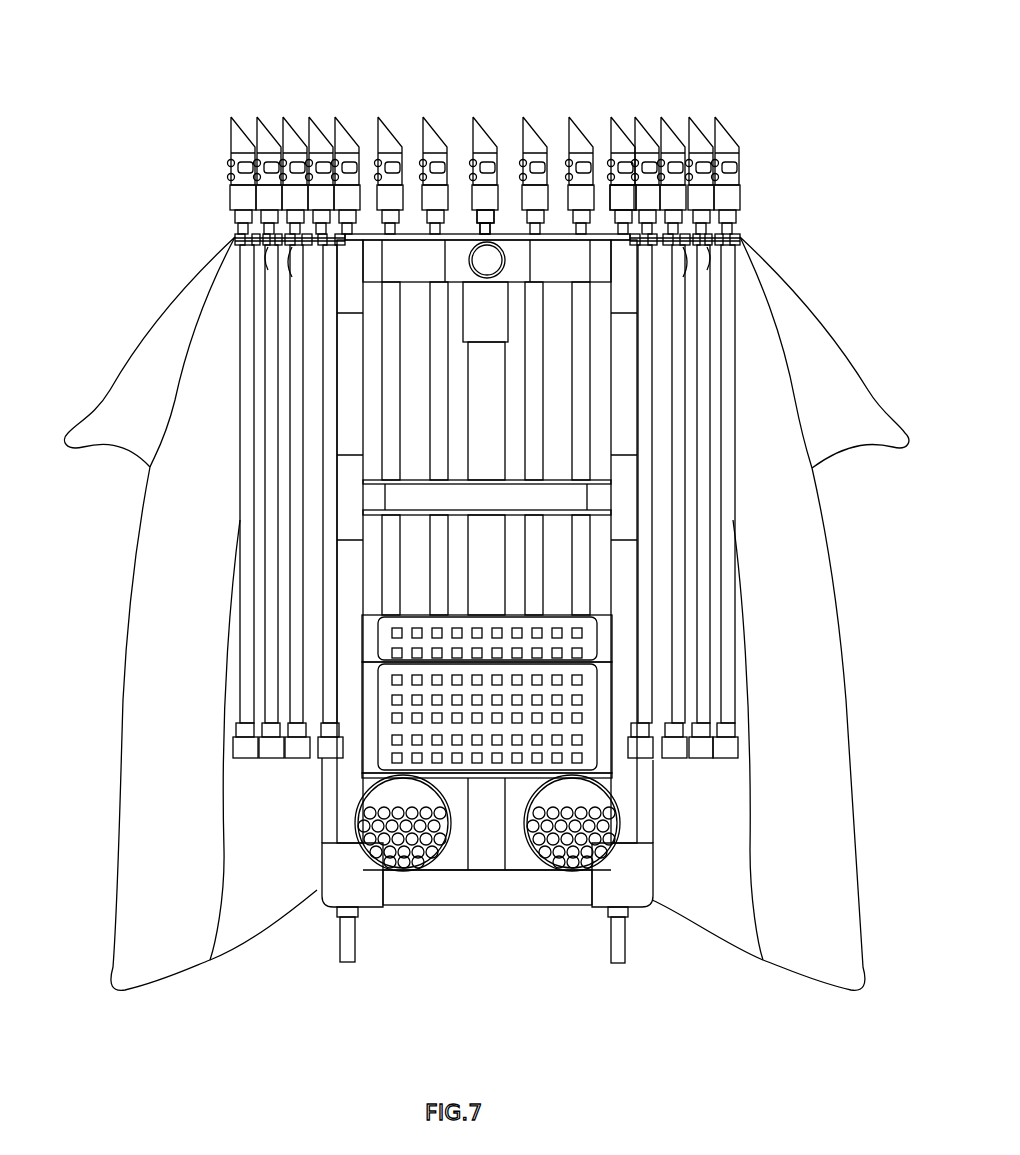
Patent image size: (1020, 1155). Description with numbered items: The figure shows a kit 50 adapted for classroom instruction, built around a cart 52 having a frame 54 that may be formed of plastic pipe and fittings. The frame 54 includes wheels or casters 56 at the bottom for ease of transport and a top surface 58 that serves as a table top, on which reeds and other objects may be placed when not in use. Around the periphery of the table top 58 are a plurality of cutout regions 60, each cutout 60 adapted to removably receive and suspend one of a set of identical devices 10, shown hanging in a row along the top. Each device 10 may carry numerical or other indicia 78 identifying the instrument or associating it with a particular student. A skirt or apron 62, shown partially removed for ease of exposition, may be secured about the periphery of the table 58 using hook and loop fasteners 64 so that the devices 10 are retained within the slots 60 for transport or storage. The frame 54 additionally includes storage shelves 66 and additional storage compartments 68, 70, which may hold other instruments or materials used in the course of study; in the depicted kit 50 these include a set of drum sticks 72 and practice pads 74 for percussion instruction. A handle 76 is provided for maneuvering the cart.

The device 10 is at (716, 117).
The kit 50 is at (848, 107).
The cart 52 is at (432, 893).
The frame 54 is at (333, 800).
The casters 56 is at (337, 957).
The top surface 58 is at (488, 242).
The cutout regions 60 is at (297, 246).
The apron 62 is at (782, 263).
The hook and loop fasteners 64 is at (340, 248).
The storage shelves 66 is at (500, 507).
The storage compartment 68 is at (533, 850).
The storage compartment 70 is at (600, 753).
The drum sticks 72 is at (563, 853).
The practice pads 74 is at (557, 717).
The handle 76 is at (500, 215).
The indicia 78 is at (635, 195).